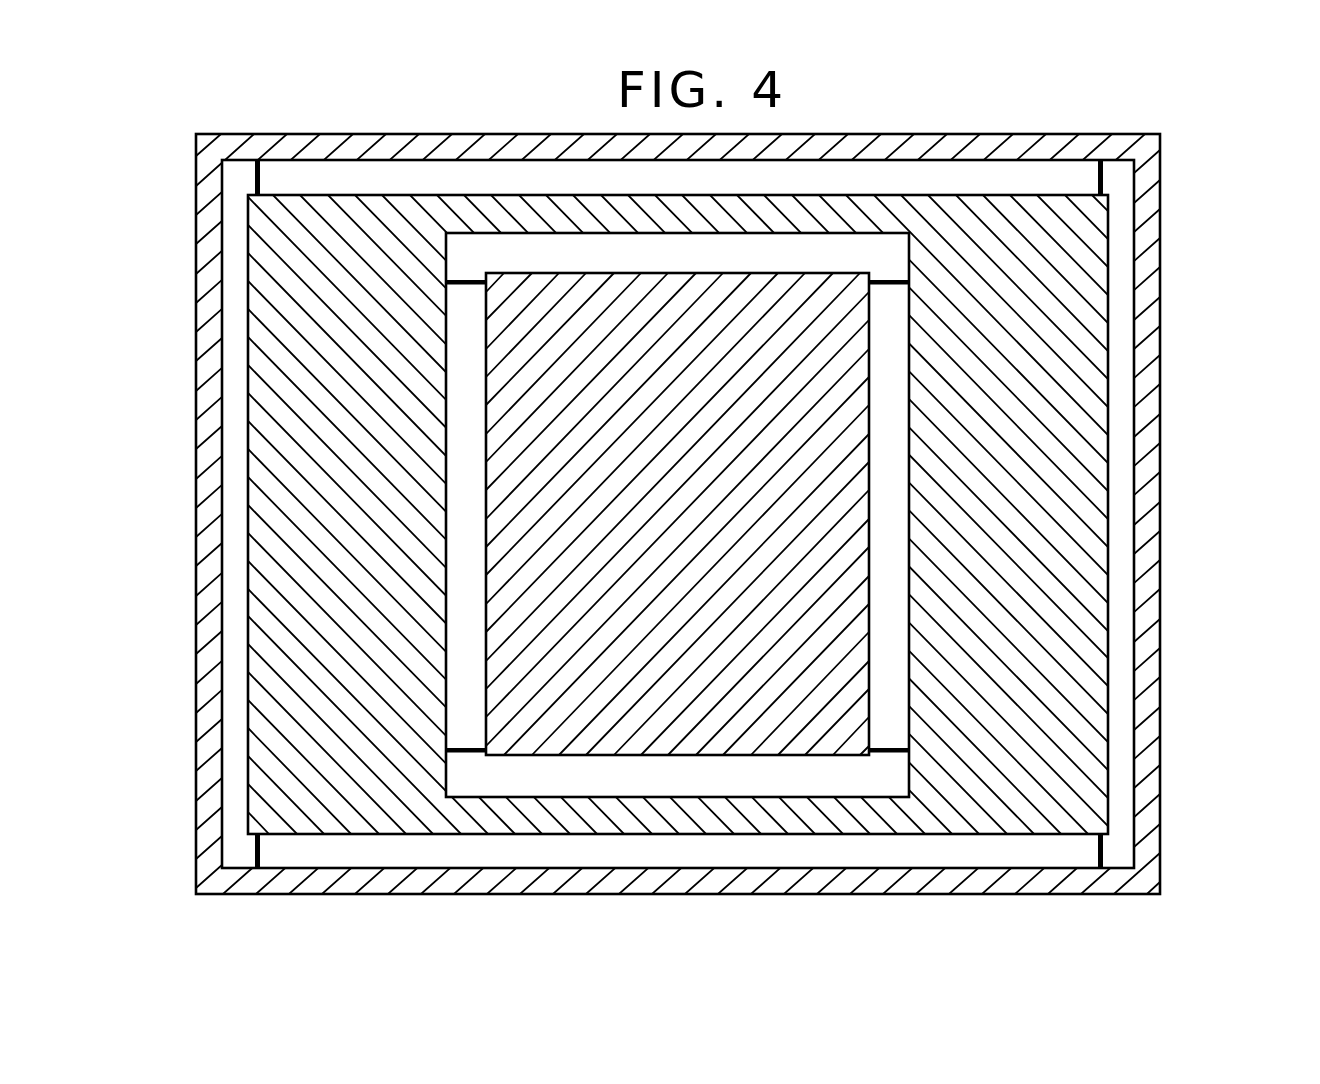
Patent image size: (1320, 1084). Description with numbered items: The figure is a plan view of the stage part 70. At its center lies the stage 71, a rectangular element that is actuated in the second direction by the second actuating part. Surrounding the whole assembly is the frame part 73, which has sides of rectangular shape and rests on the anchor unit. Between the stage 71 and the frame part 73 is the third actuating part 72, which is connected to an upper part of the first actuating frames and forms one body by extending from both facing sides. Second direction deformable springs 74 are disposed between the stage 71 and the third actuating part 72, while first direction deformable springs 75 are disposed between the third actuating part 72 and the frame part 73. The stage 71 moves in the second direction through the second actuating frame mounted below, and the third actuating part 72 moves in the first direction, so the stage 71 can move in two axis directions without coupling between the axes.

The stage part 70 is at (1186, 507).
The stage 71 is at (543, 653).
The third actuating part 72 is at (302, 542).
The frame part 73 is at (913, 152).
The second direction deformable springs 74 is at (886, 751).
The first direction deformable springs 75 is at (1105, 855).